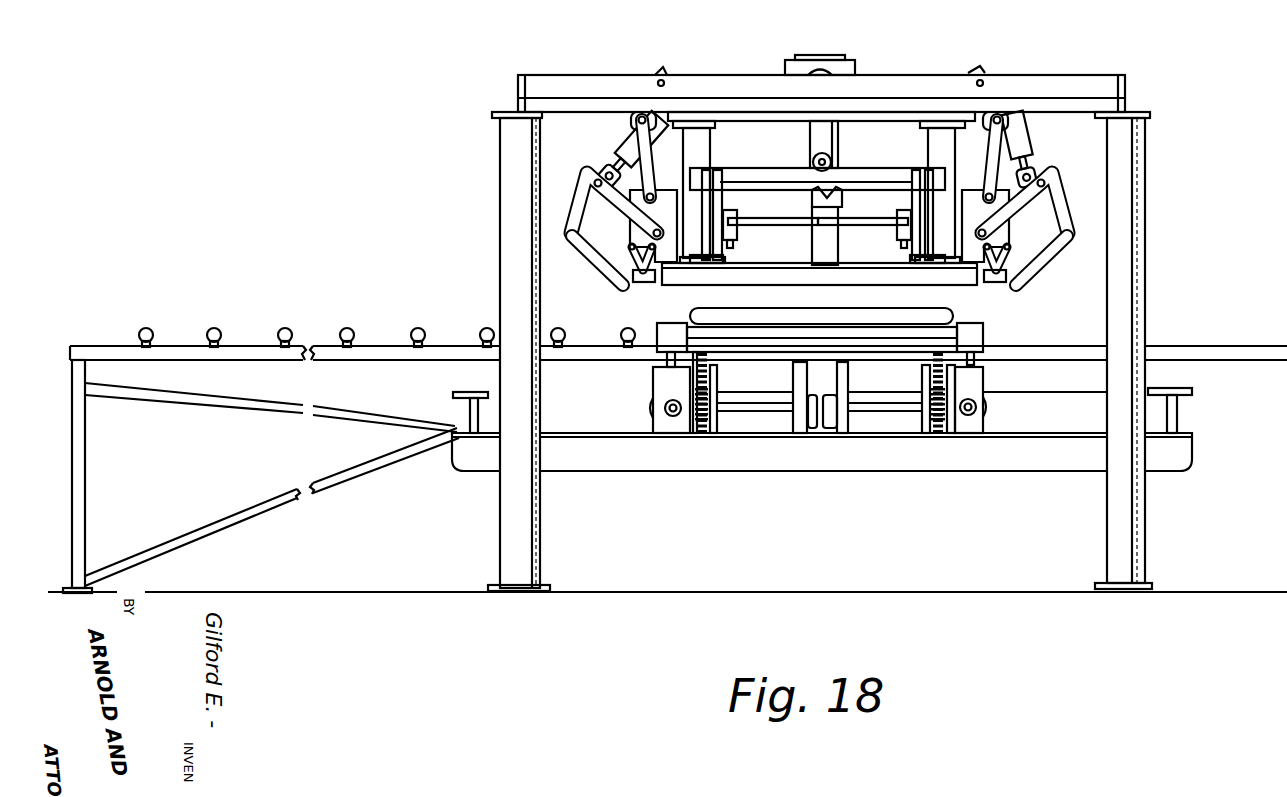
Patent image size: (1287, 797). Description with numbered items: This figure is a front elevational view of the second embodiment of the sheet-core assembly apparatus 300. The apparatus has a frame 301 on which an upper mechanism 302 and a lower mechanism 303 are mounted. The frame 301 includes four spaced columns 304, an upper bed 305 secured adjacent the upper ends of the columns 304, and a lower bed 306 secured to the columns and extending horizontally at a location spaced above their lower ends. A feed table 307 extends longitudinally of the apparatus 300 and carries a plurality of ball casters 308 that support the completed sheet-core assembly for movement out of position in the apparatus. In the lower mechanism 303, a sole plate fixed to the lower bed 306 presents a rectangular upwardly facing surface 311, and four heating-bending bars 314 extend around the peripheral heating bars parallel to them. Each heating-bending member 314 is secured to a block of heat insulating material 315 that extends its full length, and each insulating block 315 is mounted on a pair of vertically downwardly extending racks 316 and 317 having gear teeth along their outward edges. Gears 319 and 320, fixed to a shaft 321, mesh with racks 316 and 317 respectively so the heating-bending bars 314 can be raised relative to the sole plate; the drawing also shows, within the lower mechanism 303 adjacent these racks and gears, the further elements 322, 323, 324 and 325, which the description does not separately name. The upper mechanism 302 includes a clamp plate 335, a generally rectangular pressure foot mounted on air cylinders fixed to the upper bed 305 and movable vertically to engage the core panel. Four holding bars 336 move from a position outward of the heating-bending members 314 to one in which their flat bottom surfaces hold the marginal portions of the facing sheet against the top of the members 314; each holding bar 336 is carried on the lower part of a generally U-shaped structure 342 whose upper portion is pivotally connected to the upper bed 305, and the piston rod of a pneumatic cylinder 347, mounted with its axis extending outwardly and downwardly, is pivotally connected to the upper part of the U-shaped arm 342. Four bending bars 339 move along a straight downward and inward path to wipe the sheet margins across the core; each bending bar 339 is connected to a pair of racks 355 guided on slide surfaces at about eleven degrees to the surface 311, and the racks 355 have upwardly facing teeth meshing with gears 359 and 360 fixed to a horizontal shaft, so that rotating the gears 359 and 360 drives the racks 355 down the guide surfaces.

The apparatus 300 is at (844, 306).
The frame 301 is at (1152, 273).
The upper mechanism 302 is at (591, 273).
The lower mechanism 303 is at (797, 440).
The columns 304 is at (1125, 550).
The upper bed 305 is at (579, 86).
The lower bed 306 is at (590, 462).
The feed table 307 is at (102, 347).
The ball casters 308 is at (232, 337).
The upwardly facing surface 311 is at (875, 320).
The heating-bending bars 314 is at (770, 327).
The block of heat insulating material 315 is at (666, 322).
The rack 316 is at (722, 363).
The rack 317 is at (913, 362).
The gear 319 is at (703, 424).
The gear 320 is at (938, 428).
The shaft 321 is at (863, 408).
The roller housing 322 is at (690, 424).
The pinion gear 323 is at (722, 421).
The pinion gear 324 is at (923, 420).
The roller housing 325 is at (958, 421).
The clamp plate 335 is at (975, 282).
The holding bars 336 is at (1035, 280).
The bending bars 339 is at (1002, 287).
The U-shaped structure 342 is at (1076, 197).
The pneumatic cylinder 347 is at (1027, 128).
The racks 355 is at (898, 241).
The gear 359 is at (737, 213).
The gear 360 is at (902, 212).